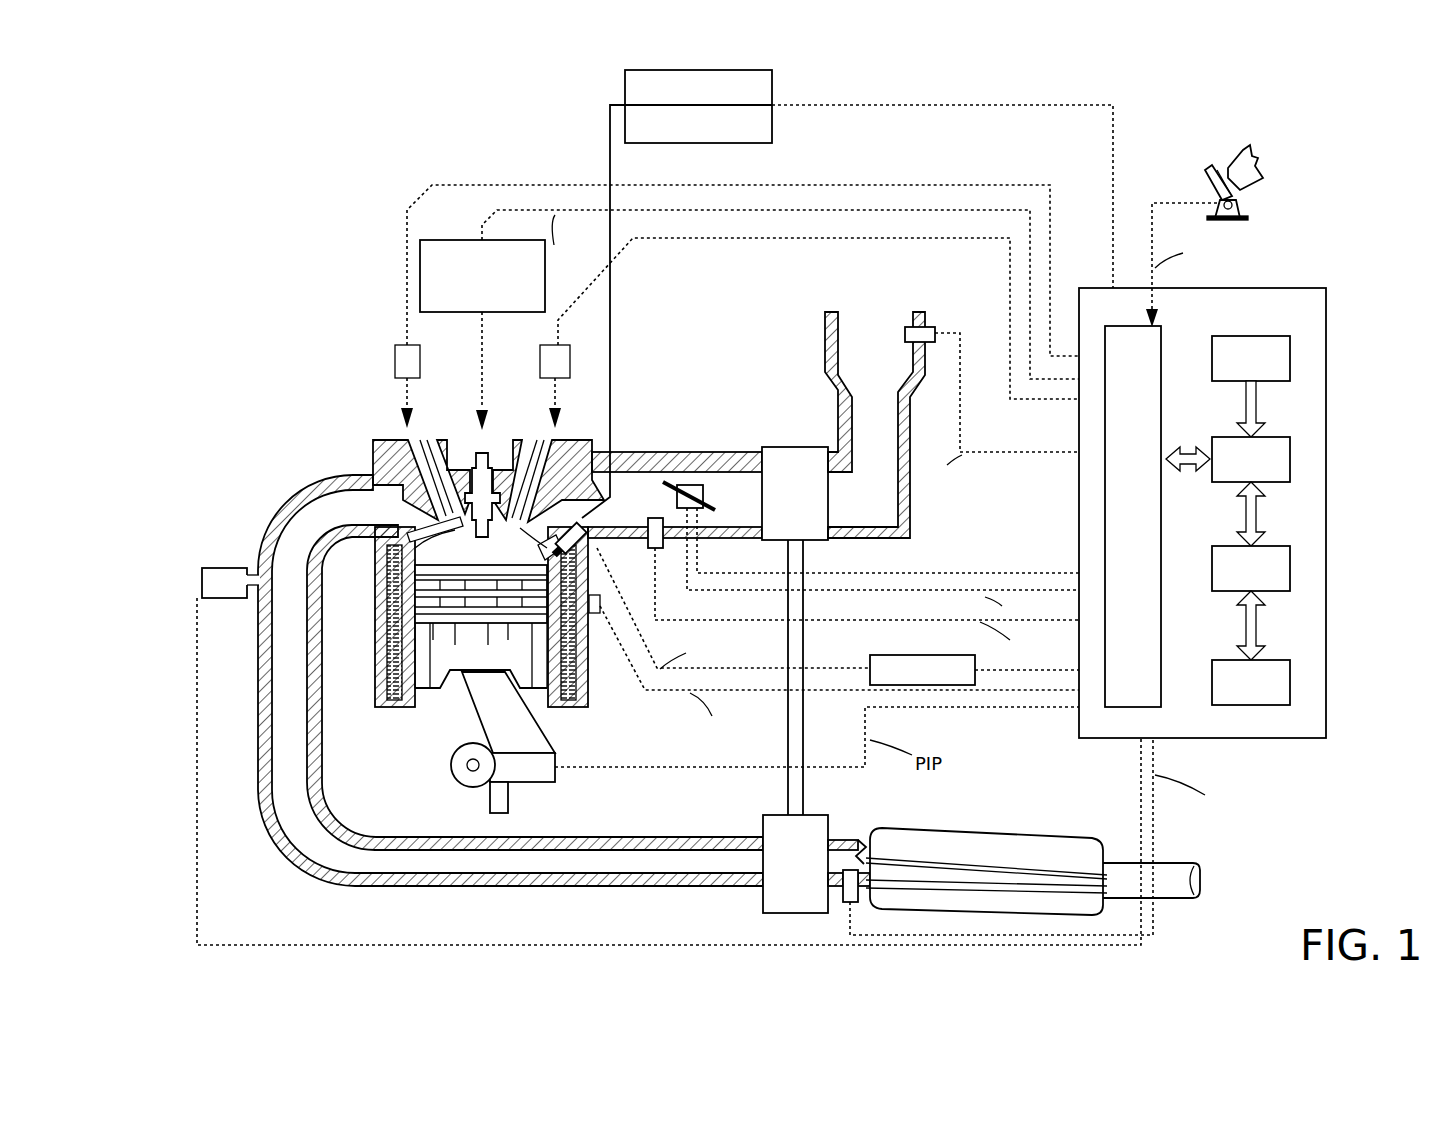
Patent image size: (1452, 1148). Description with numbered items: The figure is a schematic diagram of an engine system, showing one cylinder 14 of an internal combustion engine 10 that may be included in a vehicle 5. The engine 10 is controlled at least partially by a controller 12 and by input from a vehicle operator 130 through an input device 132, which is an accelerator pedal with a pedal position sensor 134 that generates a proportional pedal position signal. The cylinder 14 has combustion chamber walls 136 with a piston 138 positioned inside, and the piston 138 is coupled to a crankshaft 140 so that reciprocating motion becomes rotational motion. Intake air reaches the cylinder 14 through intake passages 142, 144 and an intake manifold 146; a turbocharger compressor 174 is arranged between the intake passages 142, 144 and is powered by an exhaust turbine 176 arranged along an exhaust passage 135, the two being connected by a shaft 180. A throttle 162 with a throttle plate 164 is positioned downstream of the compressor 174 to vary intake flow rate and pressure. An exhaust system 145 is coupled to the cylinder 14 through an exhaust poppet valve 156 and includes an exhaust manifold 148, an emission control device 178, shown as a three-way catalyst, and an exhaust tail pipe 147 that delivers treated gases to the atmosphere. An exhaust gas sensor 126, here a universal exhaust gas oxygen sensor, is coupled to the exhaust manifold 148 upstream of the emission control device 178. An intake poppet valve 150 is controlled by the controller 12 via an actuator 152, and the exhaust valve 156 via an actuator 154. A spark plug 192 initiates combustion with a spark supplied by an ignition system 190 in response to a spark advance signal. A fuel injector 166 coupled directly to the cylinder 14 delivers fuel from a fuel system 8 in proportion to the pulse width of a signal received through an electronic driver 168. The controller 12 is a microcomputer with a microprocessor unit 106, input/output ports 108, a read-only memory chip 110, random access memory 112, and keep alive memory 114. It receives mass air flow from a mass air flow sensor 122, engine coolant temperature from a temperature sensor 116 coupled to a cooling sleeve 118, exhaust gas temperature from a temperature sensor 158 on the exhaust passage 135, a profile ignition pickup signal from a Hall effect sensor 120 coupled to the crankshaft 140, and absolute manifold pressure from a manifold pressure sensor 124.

The vehicle 5 is at (1380, 96).
The fuel system 8 is at (740, 72).
The internal combustion engine 10 is at (296, 386).
The controller 12 is at (1326, 293).
The cylinder 14 is at (378, 566).
The microprocessor unit 106 is at (1296, 452).
The input/output ports 108 is at (1162, 333).
The read-only memory chip 110 is at (1296, 348).
The random access memory 112 is at (1296, 567).
The keep alive memory 114 is at (1296, 683).
The temperature sensor 116 is at (602, 614).
The cooling sleeve 118 is at (586, 625).
The Hall effect sensor 120 is at (510, 800).
The mass air flow sensor 122 is at (930, 327).
The MAP sensor 124 is at (660, 560).
The exhaust gas sensor 126 is at (202, 572).
The vehicle operator 130 is at (1265, 168).
The input device 132 is at (1205, 185).
The pedal position sensor 134 is at (1245, 208).
The exhaust passage 135 is at (675, 840).
The combustion chamber walls 136 is at (420, 705).
The piston 138 is at (468, 655).
The crankshaft 140 is at (478, 787).
The intake passage 142 is at (875, 425).
The intake passage 144 is at (675, 495).
The exhaust system 145 is at (226, 497).
The intake manifold 146 is at (644, 494).
The exhaust tail pipe 147 is at (1170, 860).
The exhaust manifold 148 is at (535, 674).
The intake poppet valve 150 is at (525, 470).
The actuator 152 is at (540, 360).
The actuator 154 is at (398, 350).
The exhaust poppet valve 156 is at (400, 472).
The temperature sensor 158 is at (845, 908).
The throttle 162 is at (700, 484).
The throttle plate 164 is at (666, 480).
The fuel injector 166 is at (572, 526).
The electronic driver 168 is at (872, 656).
The compressor 174 is at (795, 493).
The exhaust turbine 176 is at (816, 864).
The emission control device 178 is at (1058, 832).
The shaft 180 is at (806, 778).
The ignition system 190 is at (433, 240).
The spark plug 192 is at (478, 450).